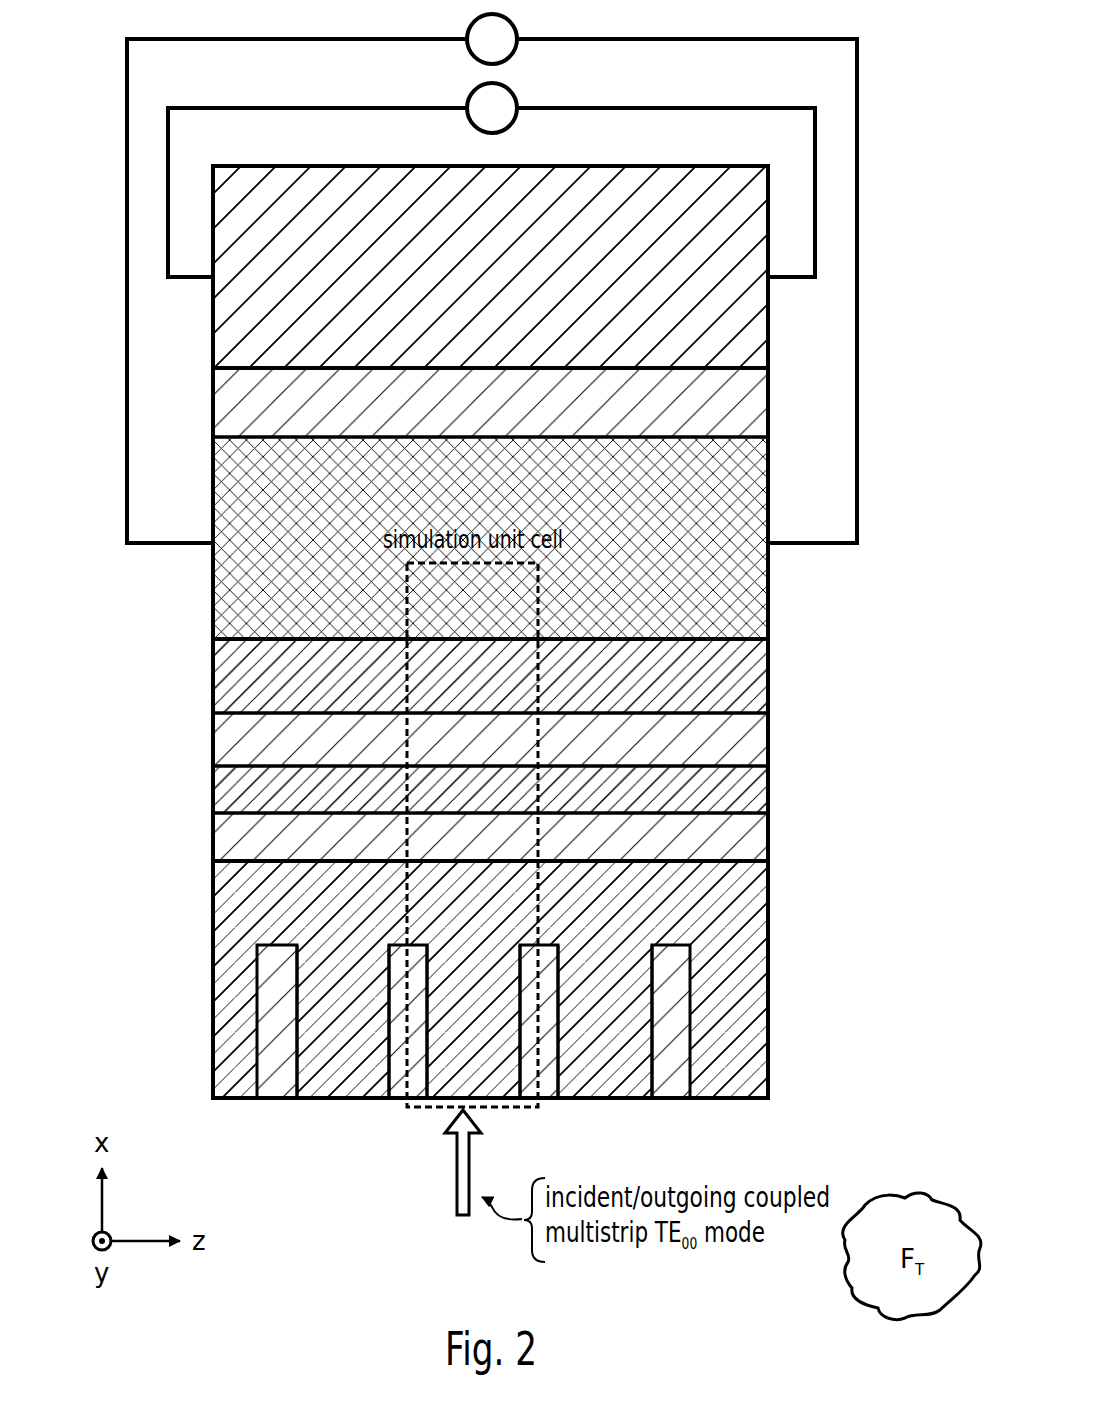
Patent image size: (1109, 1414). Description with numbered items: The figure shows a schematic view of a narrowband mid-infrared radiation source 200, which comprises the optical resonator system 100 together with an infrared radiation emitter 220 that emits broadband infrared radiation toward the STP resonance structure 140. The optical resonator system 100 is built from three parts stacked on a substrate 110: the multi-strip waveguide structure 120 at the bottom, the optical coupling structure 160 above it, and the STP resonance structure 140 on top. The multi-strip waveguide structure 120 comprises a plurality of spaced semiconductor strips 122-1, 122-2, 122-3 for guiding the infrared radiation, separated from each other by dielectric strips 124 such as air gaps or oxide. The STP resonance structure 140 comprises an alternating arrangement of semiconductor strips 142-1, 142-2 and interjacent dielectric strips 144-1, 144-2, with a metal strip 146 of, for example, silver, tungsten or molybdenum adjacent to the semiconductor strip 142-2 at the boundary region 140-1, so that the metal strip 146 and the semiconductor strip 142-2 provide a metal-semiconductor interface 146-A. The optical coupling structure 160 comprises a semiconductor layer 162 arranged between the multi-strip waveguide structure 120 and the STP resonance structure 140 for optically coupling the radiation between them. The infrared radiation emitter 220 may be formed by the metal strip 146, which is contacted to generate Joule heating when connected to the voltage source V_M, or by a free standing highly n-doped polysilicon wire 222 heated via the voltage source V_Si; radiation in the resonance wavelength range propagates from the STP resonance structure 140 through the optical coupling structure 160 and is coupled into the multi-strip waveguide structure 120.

The narrowband mid-infrared radiation source 200 is at (112, 31).
The infrared radiation emitter 220 is at (599, 399).
The highly n-doped polysilicon wire 222 is at (772, 213).
The metal strip 146 is at (772, 473).
The metal-semiconductor interface 146-A is at (744, 635).
The STP resonance structure 140 is at (596, 649).
The boundary region 140-1 is at (186, 608).
The semiconductor strip 142-2 is at (772, 677).
The dielectric strip 144-2 is at (772, 741).
The semiconductor strip 142-1 is at (772, 787).
The dielectric strip 144-1 is at (552, 823).
The optical coupling structure 160 is at (567, 979).
The semiconductor layer 162 is at (740, 930).
The multi-strip waveguide structure 120 is at (568, 1060).
The semiconductor strip 122-1 is at (335, 1092).
The semiconductor strip 122-2 is at (483, 1092).
The semiconductor strip 122-3 is at (620, 1092).
The dielectric strips 124 is at (267, 1092).
The substrate 110 is at (522, 1018).
The optical resonator system 100 is at (213, 368).